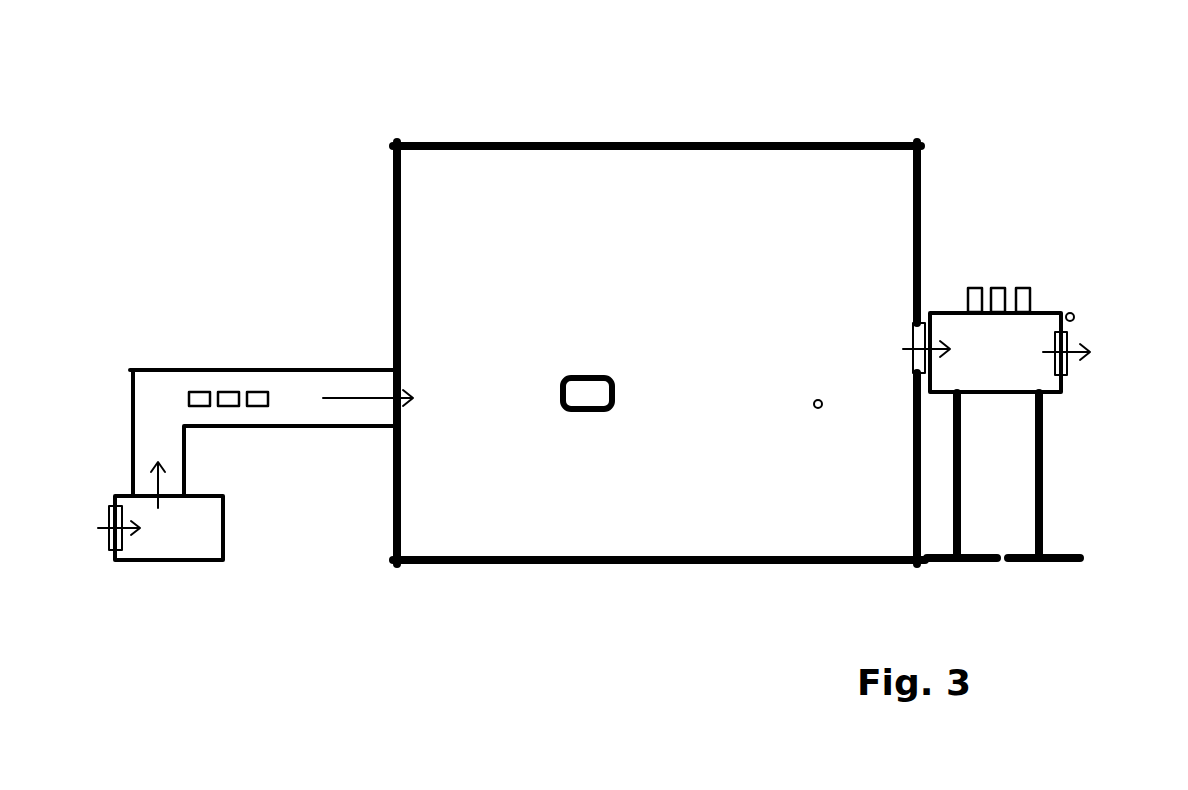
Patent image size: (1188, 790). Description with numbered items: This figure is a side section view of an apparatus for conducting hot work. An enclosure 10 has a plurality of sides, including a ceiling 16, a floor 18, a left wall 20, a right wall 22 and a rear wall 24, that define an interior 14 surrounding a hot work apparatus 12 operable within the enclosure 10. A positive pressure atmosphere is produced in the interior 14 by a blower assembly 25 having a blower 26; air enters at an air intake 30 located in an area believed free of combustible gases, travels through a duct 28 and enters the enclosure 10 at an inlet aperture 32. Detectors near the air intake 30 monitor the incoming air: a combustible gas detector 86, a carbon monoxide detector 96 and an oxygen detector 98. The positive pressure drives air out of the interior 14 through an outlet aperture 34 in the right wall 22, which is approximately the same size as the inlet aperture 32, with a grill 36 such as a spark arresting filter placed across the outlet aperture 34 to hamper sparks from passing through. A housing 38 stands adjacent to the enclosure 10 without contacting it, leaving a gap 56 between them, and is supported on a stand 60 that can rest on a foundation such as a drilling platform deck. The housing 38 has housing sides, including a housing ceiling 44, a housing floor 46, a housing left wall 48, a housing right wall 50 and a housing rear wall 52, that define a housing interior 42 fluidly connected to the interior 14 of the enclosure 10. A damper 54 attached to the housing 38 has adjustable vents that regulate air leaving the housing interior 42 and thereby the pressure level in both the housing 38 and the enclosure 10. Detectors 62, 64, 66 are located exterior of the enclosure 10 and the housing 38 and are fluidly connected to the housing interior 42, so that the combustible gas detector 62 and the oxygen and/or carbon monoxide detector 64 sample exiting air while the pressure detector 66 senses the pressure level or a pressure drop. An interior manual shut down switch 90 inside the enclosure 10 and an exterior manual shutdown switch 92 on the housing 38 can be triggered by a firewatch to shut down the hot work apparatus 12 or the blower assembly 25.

The enclosure 10 is at (806, 110).
The hot work apparatus 12 is at (587, 390).
The interior 14 is at (587, 180).
The ceiling 16 is at (480, 143).
The floor 18 is at (527, 565).
The left wall 20 is at (393, 228).
The right wall 22 is at (922, 190).
The rear wall 24 is at (433, 510).
The blower assembly 25 is at (118, 594).
The blower 26 is at (193, 538).
The duct 28 is at (278, 367).
The air intake 30 is at (108, 517).
The inlet aperture 32 is at (398, 372).
The outlet aperture 34 is at (913, 330).
The grill 36 is at (912, 358).
The housing 38 is at (1072, 400).
The interior of the housing 42 is at (1019, 368).
The housing ceiling 44 is at (952, 312).
The housing floor 46 is at (990, 395).
The housing left wall 48 is at (930, 377).
The housing right wall 50 is at (1065, 385).
The housing rear wall 52 is at (1037, 327).
The damper 54 is at (1067, 363).
The gap 56 is at (920, 395).
The stand 60 is at (1087, 508).
The combustible gas detector 62 is at (978, 290).
The oxygen and/or carbon monoxide detector 64 is at (1001, 290).
The pressure detector 66 is at (1023, 290).
The combustible gas detector 86 is at (228, 393).
The interior manual shut down switch 90 is at (814, 406).
The exterior manual shutdown switch 92 is at (1073, 313).
The carbon monoxide detector 96 is at (190, 392).
The oxygen detector 98 is at (260, 393).